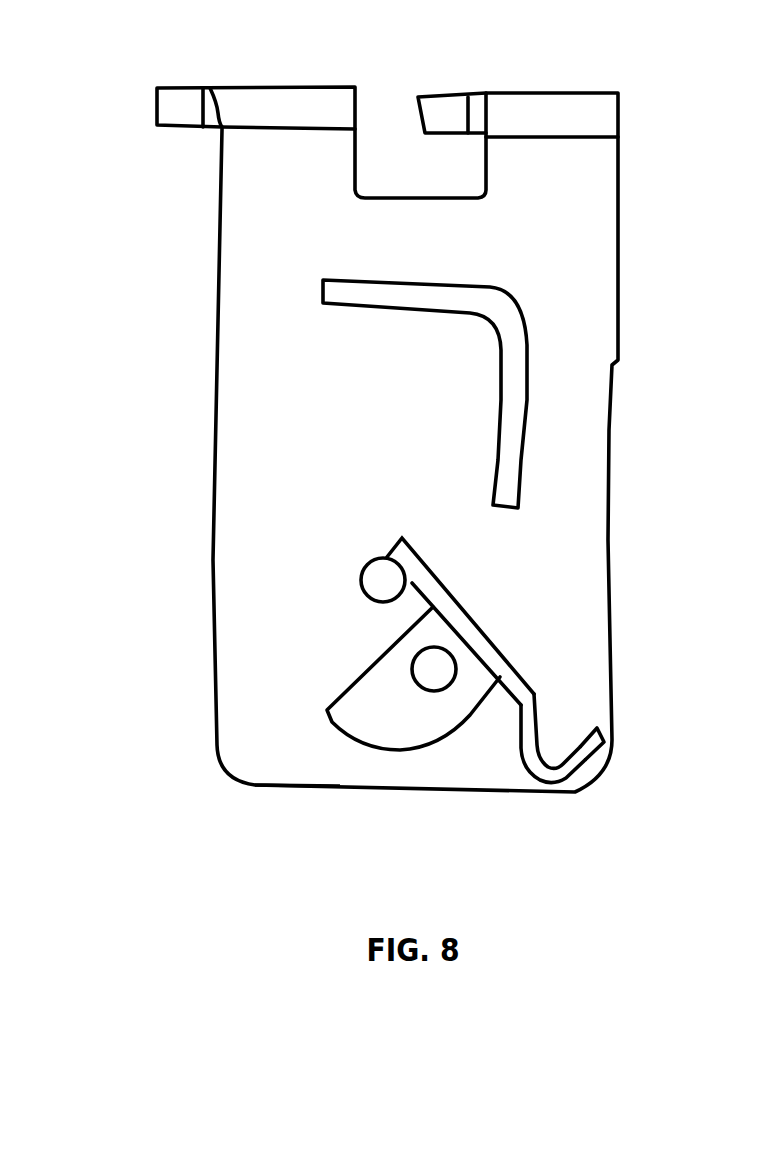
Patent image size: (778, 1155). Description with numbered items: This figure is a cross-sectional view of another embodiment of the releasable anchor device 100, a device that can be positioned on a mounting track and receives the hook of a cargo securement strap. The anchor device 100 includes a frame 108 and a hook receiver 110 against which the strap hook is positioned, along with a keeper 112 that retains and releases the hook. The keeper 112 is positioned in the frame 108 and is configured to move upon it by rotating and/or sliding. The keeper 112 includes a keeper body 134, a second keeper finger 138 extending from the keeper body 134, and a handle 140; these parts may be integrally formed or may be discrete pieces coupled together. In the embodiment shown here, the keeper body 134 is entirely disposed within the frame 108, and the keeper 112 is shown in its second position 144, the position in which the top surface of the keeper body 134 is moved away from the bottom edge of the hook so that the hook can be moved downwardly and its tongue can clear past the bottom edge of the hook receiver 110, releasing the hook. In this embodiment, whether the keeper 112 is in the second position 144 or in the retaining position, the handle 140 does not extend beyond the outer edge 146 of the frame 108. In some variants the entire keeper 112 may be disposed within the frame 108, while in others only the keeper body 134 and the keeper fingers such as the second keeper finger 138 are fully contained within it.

The releasable anchor device 100 is at (125, 65).
The frame 108 is at (222, 560).
The hook receiver 110 is at (510, 453).
The keeper 112 is at (512, 680).
The keeper body 134 is at (432, 588).
The second keeper finger 138 is at (352, 698).
The handle 140 is at (593, 743).
The second position 144 is at (470, 765).
The outer edge 146 is at (310, 787).